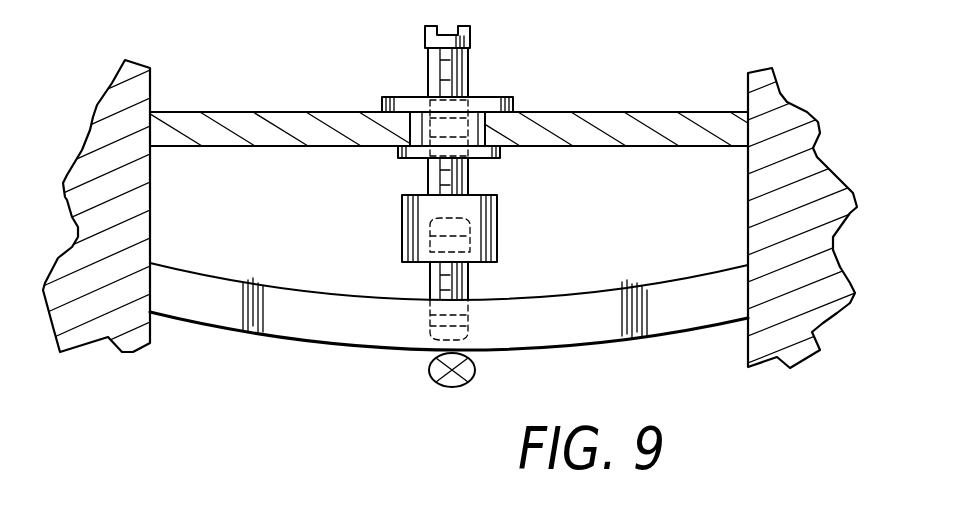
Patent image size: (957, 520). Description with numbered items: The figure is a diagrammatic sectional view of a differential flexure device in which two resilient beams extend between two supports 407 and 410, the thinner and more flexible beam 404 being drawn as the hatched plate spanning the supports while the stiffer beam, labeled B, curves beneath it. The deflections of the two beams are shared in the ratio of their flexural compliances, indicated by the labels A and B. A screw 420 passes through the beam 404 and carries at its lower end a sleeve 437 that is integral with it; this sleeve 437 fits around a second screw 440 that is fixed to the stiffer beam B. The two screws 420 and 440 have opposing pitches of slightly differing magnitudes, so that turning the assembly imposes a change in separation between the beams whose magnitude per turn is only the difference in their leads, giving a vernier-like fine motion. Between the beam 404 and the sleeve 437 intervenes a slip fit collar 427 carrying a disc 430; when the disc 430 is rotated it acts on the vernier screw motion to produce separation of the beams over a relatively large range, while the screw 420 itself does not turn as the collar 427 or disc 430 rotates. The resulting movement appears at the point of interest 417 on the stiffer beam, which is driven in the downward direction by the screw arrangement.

The resilient beam 404 is at (603, 112).
The support 407 is at (152, 192).
The support 410 is at (746, 187).
The point of interest 417 is at (441, 387).
The screw 420 is at (430, 73).
The slip fit collar 427 is at (491, 97).
The disc 430 is at (383, 101).
The sleeve 437 is at (498, 225).
The screw 440 is at (429, 283).
The flexure of beam A is at (700, 113).
The flexure of beam B is at (716, 310).